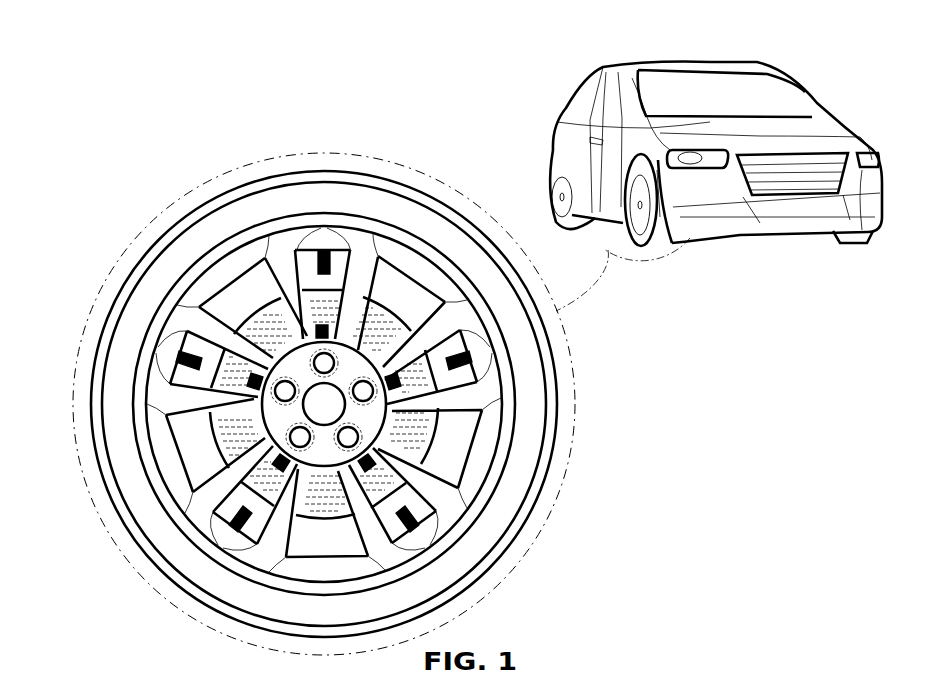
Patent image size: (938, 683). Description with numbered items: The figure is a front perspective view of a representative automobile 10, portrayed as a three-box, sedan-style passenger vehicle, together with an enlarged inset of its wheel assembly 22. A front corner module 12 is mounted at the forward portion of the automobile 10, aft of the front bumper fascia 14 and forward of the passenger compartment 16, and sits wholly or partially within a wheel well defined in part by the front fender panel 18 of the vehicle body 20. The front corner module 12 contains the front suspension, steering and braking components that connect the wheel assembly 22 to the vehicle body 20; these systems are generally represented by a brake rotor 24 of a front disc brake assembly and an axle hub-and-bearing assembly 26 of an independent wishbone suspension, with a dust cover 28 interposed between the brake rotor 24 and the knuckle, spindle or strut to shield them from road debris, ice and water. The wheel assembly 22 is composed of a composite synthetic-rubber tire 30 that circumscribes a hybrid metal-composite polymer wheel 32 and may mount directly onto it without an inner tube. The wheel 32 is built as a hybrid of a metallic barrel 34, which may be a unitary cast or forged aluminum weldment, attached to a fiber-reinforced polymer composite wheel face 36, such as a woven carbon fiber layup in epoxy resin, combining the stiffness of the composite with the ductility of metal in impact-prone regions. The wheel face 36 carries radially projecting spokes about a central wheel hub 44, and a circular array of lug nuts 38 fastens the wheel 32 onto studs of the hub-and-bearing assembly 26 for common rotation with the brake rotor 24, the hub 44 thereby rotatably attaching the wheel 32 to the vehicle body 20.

The automobile 10 is at (678, 158).
The front corner module 12 is at (210, 146).
The front bumper fascia 14 is at (815, 207).
The passenger compartment 16 is at (816, 80).
The front fender panel 18 is at (647, 140).
The vehicle body 20 is at (628, 162).
The wheel assembly 22 is at (146, 238).
The brake rotor 24 is at (405, 440).
The axle hub-and-bearing assembly 26 is at (405, 493).
The dust cover 28 is at (482, 400).
The tire 30 is at (165, 532).
The hybrid metal-composite polymer wheel 32 is at (143, 471).
The metallic barrel 34 is at (487, 429).
The composite wheel face 36 is at (168, 396).
The lug nuts 38 is at (172, 383).
The wheel hub 44 is at (260, 437).